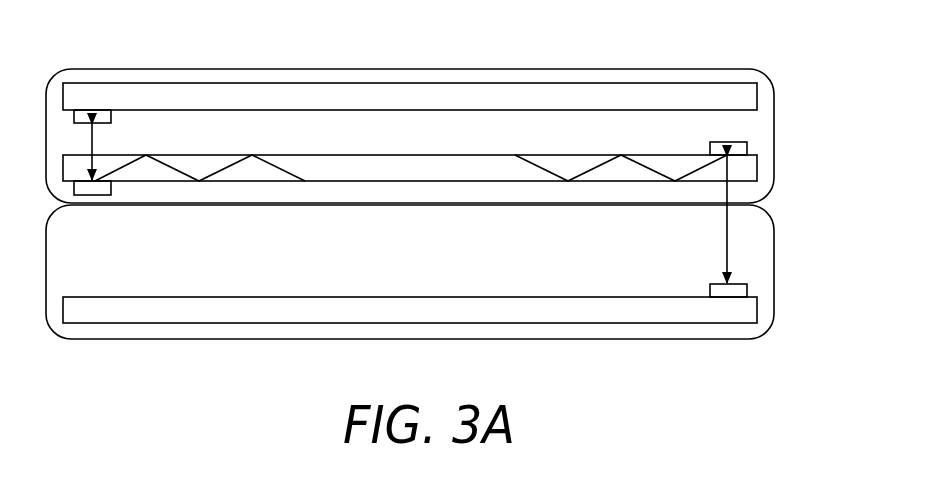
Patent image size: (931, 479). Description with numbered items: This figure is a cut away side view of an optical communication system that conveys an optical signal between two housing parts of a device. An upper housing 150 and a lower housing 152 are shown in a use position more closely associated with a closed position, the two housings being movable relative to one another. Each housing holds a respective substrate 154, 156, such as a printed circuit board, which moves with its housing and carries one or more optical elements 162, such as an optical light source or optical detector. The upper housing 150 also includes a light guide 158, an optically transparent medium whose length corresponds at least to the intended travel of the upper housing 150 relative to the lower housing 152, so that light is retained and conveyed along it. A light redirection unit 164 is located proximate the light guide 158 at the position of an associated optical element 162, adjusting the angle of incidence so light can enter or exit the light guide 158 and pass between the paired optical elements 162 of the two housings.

The upper housing 150 is at (764, 91).
The lower housing 152 is at (764, 312).
The substrate 154 is at (683, 92).
The substrate 156 is at (623, 315).
The light guide 158 is at (410, 166).
The optical element 162 is at (93, 113).
The light redirection unit 164 is at (93, 196).